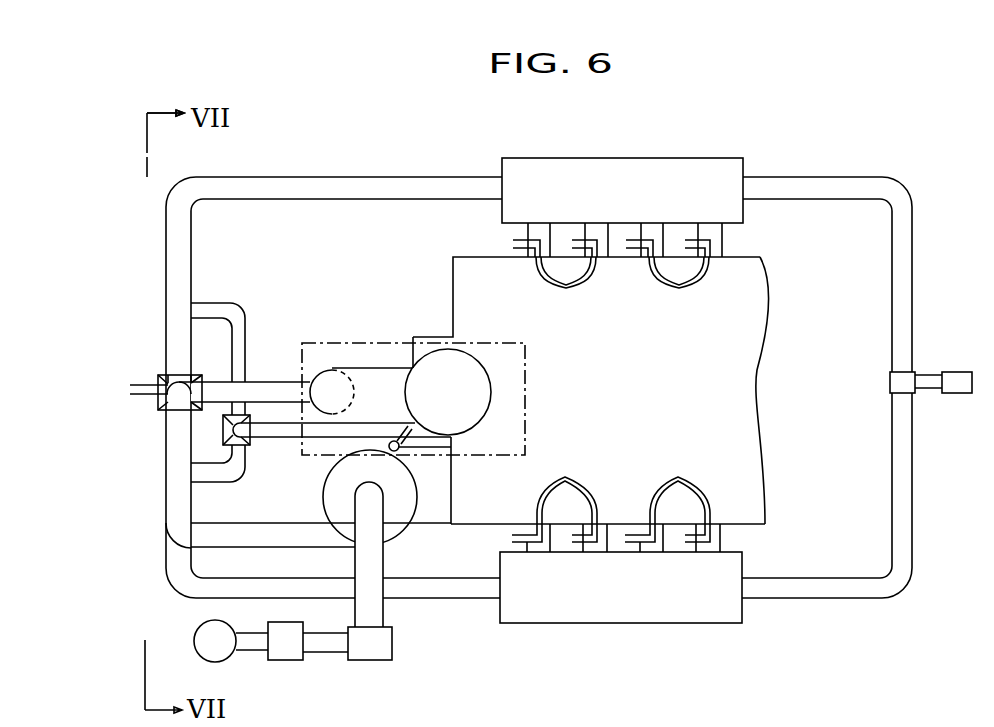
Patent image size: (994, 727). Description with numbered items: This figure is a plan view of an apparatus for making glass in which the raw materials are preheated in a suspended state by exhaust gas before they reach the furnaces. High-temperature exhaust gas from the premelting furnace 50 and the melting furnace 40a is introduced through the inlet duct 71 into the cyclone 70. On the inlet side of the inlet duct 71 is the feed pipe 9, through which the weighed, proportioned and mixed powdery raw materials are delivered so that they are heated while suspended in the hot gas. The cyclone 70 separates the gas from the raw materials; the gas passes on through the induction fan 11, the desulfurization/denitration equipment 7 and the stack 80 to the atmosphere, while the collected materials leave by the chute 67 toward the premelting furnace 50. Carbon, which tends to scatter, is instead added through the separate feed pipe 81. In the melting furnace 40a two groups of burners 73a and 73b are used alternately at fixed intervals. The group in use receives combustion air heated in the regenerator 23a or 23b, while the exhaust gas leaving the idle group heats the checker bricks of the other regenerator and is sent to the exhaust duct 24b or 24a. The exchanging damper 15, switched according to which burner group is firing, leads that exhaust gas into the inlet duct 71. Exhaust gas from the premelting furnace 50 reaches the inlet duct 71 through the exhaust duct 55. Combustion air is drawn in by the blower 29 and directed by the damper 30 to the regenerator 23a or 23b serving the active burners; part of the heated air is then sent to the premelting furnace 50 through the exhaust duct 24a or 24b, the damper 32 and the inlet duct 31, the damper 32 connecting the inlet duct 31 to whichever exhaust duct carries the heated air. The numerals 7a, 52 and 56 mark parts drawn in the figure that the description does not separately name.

The desulfurization/denitration equipment 7 is at (282, 643).
The supply pipe 7a is at (373, 563).
The feed pipe 9 is at (137, 396).
The induction fan 11 is at (367, 643).
The exchanging damper 15 is at (157, 378).
The regenerator 23a is at (692, 168).
The regenerator 23b is at (602, 612).
The exhaust duct 24a is at (395, 190).
The exhaust duct 24b is at (440, 598).
The blower 29 is at (955, 397).
The damper 30 is at (890, 382).
The inlet duct 31 is at (282, 440).
The damper 32 is at (258, 448).
The melting furnace 40a is at (741, 366).
The premelting furnace 50 is at (510, 363).
The pump 52 is at (460, 370).
The exhaust duct 55 is at (280, 380).
The motor 56 is at (332, 382).
The chute 67 is at (400, 452).
The cyclone 70 is at (398, 518).
The inlet duct 71 is at (170, 470).
The group of burners 73a is at (617, 270).
The group of burners 73b is at (616, 501).
The stack 80 is at (208, 640).
The feed pipe 81 is at (391, 441).